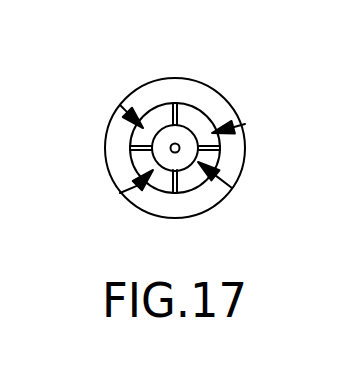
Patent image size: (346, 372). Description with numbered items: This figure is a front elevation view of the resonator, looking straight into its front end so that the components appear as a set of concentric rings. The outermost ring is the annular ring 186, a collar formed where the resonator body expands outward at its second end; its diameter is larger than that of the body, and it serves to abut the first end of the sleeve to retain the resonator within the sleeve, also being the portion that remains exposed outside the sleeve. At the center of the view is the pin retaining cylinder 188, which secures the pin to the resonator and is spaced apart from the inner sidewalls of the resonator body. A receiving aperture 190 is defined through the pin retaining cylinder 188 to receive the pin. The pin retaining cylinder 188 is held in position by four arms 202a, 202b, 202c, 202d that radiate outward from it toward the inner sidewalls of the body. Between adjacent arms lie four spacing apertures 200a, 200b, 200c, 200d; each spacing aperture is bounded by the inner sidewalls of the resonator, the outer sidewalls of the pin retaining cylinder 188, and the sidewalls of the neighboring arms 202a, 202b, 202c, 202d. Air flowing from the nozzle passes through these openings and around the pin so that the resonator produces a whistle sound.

The annular ring 186 is at (226, 99).
The pin retaining cylinder 188 is at (183, 168).
The receiving aperture 190 is at (176, 146).
The spacing aperture 200a is at (120, 193).
The spacing aperture 200b is at (120, 105).
The spacing aperture 200c is at (245, 124).
The spacing aperture 200d is at (232, 188).
The arm 202a is at (175, 193).
The arm 202b is at (130, 148).
The arm 202c is at (175, 103).
The arm 202d is at (220, 148).